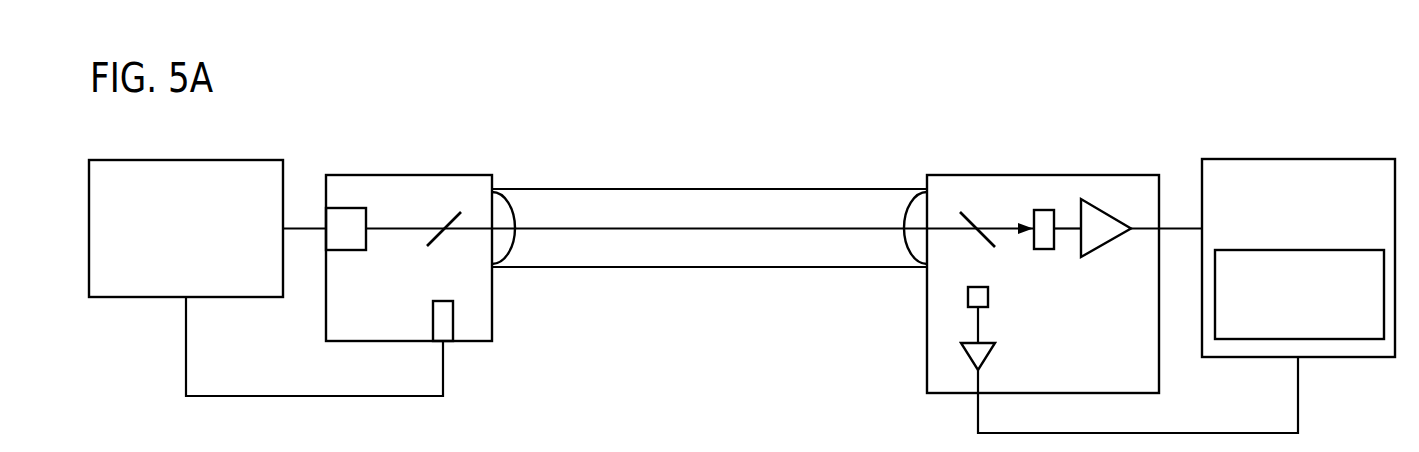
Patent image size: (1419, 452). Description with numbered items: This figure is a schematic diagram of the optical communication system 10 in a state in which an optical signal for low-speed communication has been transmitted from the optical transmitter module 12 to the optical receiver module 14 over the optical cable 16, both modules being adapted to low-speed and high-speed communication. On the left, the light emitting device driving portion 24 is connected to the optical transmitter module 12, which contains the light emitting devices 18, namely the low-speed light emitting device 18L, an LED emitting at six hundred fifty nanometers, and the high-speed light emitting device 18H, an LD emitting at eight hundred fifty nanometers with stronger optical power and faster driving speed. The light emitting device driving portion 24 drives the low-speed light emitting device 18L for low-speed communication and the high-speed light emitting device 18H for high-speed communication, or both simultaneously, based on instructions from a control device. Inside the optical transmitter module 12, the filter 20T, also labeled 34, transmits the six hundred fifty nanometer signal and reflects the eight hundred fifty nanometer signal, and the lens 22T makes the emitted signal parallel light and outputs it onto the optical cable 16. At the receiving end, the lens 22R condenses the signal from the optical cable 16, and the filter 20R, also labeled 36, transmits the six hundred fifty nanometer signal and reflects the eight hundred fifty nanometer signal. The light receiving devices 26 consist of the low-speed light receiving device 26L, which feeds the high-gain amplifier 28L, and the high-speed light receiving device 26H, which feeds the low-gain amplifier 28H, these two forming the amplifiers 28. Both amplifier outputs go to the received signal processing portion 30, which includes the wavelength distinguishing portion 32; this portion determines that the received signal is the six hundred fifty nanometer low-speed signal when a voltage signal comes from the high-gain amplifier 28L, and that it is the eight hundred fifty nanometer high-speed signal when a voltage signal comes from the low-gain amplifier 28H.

The optical communication system 10 is at (292, 96).
The optical transmitter module 12 is at (489, 155).
The optical receiver module 14 is at (1327, 135).
The optical cable 16 is at (750, 187).
The light emitting device 18 is at (404, 255).
The low-speed light emitting device 18L is at (345, 208).
The high-speed light emitting device 18H is at (447, 320).
The filter 20T is at (448, 215).
The filter 20R is at (975, 223).
The lens 22T is at (512, 245).
The lens 22R is at (903, 243).
The light emitting device driving portion 24 is at (158, 159).
The light receiving device 26 is at (1040, 218).
The low-speed light receiving device 26L is at (1046, 210).
The high-speed light receiving device 26H is at (989, 294).
The amplifier 28 is at (1064, 251).
The high-gain amplifier 28L is at (1097, 207).
The low-gain amplifier 28H is at (983, 355).
The received signal processing portion 30 is at (1242, 158).
The wavelength distinguishing portion 32 is at (1348, 341).
The transmitter-side wavelength filter 34 is at (426, 172).
The receiver-side wavelength filter 36 is at (963, 185).